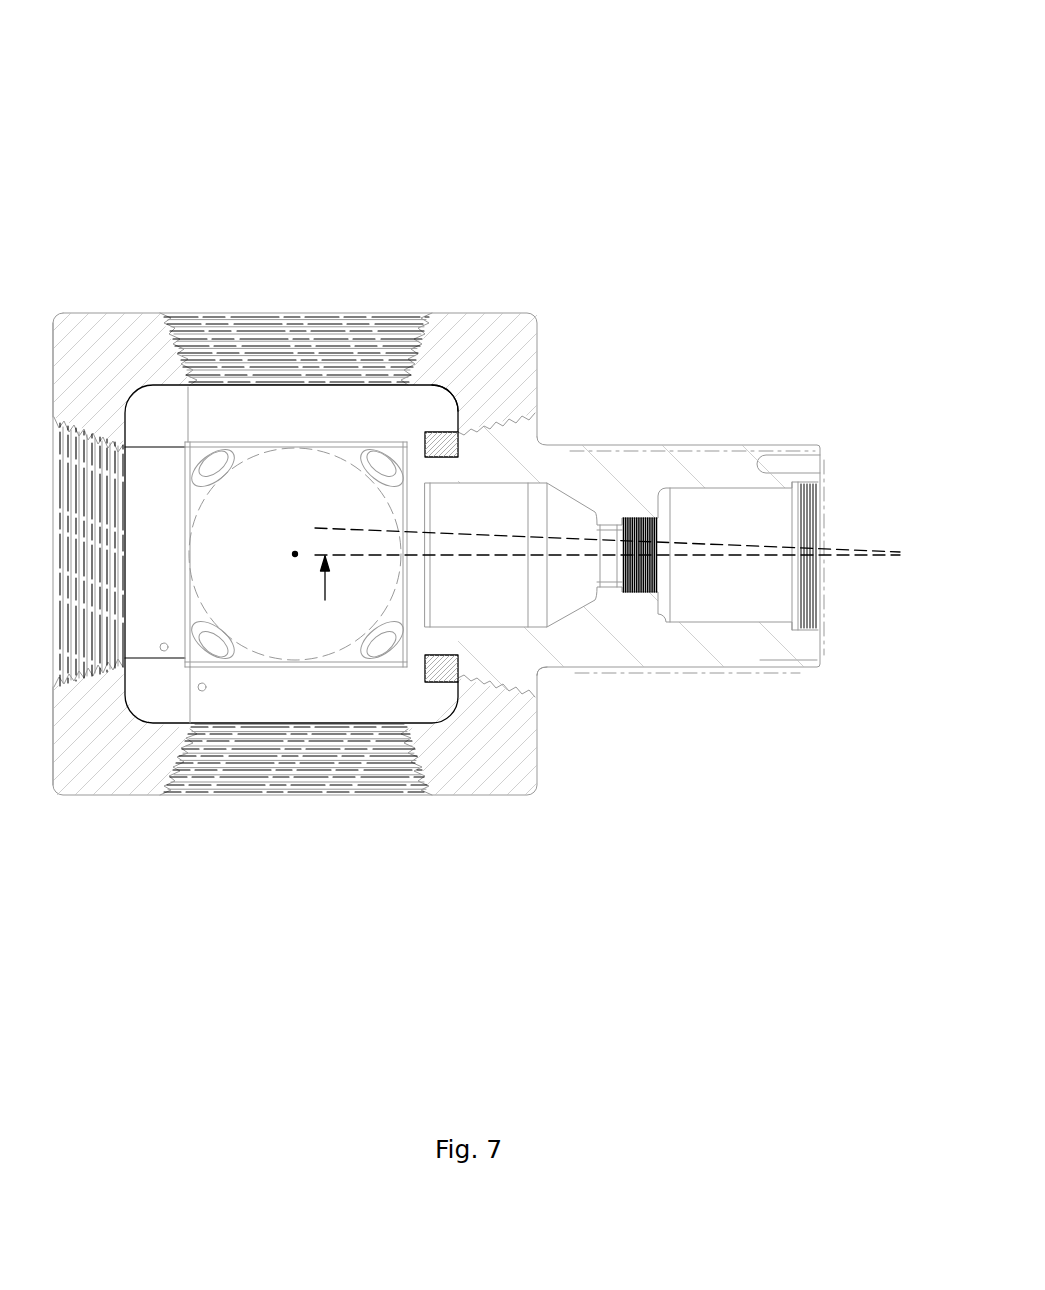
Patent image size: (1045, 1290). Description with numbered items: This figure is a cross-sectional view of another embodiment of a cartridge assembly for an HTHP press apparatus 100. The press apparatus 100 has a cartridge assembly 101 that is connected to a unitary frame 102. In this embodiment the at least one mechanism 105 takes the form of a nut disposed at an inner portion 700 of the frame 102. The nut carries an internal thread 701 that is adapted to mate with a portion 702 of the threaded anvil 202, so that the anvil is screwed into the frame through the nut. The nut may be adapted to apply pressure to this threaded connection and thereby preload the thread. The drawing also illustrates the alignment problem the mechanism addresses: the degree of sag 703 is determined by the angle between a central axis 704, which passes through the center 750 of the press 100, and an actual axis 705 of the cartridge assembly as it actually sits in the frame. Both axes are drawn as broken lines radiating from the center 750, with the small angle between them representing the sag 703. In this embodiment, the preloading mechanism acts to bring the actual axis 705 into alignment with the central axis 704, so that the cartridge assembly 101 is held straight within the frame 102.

The HTHP press apparatus 100 is at (137, 100).
The cartridge assembly 101 is at (806, 290).
The unitary frame 102 is at (493, 815).
The mechanism 105 is at (440, 418).
The threaded anvil 202 is at (500, 701).
The inner portion of the frame 700 is at (410, 712).
The internal thread 701 is at (426, 669).
The portion of the threaded anvil 702 is at (452, 456).
The degree of sag 703 is at (325, 526).
The central axis 704 is at (375, 553).
The actual axis 705 is at (349, 526).
The center of the press 750 is at (289, 560).